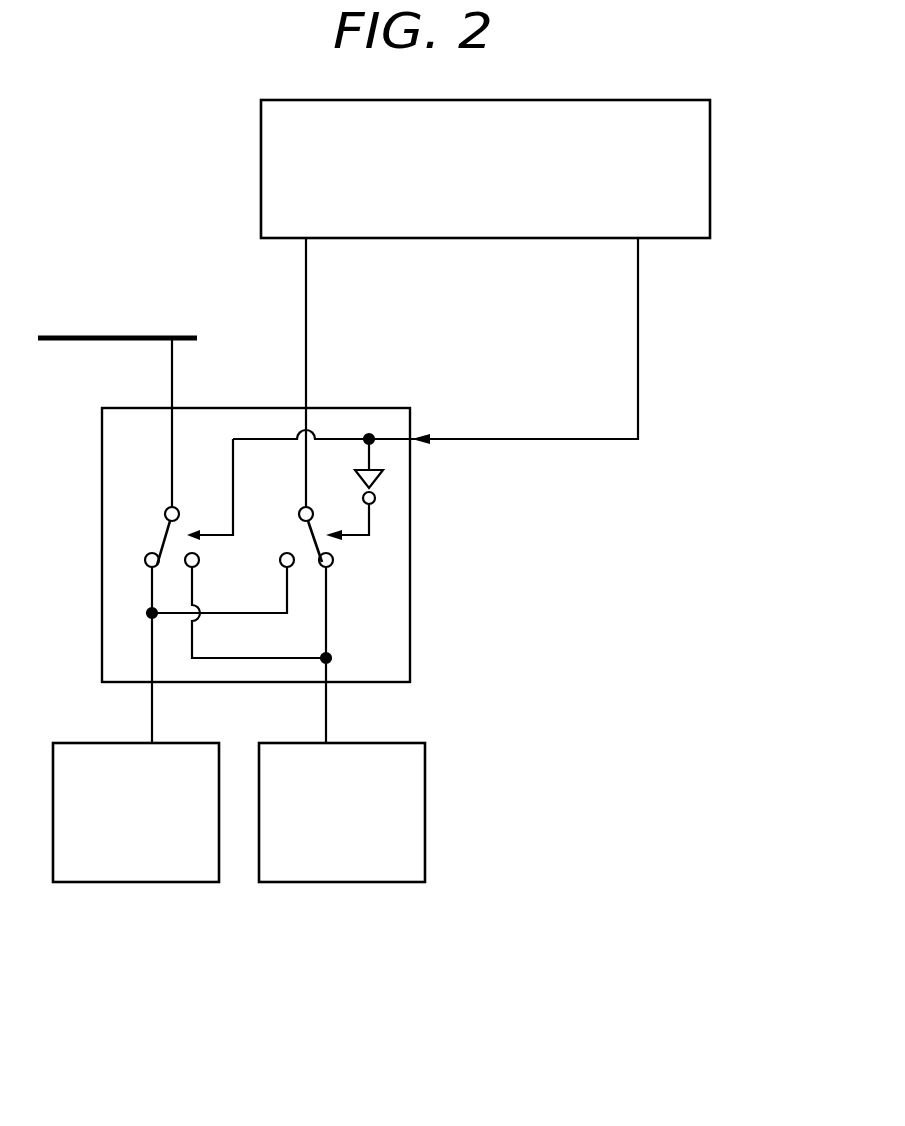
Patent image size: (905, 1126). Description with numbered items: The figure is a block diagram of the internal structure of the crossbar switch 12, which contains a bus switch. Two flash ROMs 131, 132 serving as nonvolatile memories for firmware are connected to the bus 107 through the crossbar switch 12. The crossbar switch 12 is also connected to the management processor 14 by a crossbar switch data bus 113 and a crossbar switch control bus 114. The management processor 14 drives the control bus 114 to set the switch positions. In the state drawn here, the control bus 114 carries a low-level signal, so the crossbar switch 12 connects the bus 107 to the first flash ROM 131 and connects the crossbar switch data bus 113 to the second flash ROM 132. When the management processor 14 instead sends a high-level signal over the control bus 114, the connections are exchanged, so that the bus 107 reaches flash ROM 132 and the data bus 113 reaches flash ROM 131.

The management processor 14 is at (710, 172).
The bus 107 is at (121, 337).
The crossbar switch data bus 113 is at (305, 332).
The crossbar switch control bus 114 is at (639, 330).
The crossbar switch 12 is at (410, 603).
The flash ROM 131 is at (137, 882).
The flash ROM 132 is at (338, 882).